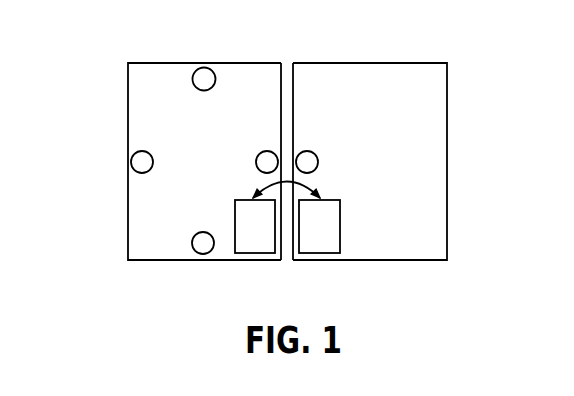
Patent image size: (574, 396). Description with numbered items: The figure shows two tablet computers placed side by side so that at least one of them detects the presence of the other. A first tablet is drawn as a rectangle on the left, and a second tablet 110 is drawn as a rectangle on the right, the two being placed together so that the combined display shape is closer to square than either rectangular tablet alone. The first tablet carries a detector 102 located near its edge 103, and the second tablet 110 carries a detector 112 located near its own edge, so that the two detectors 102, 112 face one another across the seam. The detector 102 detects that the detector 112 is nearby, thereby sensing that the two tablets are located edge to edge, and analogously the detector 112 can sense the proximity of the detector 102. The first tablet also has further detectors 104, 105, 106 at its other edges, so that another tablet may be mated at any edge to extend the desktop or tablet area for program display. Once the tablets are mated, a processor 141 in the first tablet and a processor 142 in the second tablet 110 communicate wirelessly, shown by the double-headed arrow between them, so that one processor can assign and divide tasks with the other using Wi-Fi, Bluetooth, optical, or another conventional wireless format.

The detector 102 is at (267, 150).
The edge 103 is at (267, 62).
The detector 104 is at (204, 67).
The detector 105 is at (203, 232).
The detector 106 is at (131, 162).
The second tablet 110 is at (427, 63).
The detector 112 is at (307, 150).
The processor 141 is at (245, 200).
The processor 142 is at (328, 200).